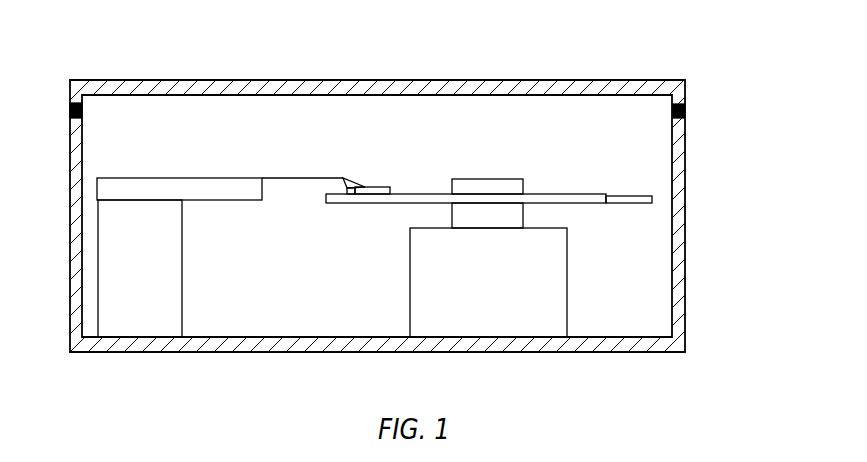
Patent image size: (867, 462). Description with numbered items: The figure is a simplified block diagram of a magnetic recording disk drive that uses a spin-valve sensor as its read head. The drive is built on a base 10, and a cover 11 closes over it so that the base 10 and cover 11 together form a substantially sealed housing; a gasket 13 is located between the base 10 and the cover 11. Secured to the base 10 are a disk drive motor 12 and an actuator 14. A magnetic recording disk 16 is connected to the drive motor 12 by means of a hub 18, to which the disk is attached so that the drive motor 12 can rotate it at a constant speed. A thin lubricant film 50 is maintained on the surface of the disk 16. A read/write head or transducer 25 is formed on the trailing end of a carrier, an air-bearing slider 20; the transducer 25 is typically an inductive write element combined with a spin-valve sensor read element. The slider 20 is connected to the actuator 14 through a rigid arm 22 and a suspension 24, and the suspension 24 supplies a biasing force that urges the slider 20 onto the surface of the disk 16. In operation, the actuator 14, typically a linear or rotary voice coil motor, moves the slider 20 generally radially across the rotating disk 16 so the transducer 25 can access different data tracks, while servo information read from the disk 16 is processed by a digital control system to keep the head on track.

The base 10 is at (680, 292).
The cover 11 is at (80, 80).
The gasket 13 is at (686, 110).
The disk drive motor 12 is at (487, 328).
The actuator 14 is at (132, 325).
The magnetic recording disk 16 is at (653, 197).
The hub 18 is at (482, 179).
The air-bearing slider 20 is at (380, 187).
The rigid arm 22 is at (170, 178).
The suspension 24 is at (280, 178).
The read/write head or transducer 25 is at (343, 178).
The thin lubricant film 50 is at (620, 196).